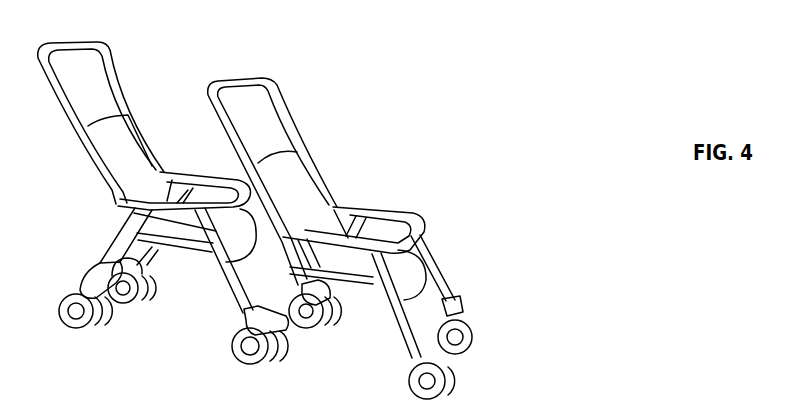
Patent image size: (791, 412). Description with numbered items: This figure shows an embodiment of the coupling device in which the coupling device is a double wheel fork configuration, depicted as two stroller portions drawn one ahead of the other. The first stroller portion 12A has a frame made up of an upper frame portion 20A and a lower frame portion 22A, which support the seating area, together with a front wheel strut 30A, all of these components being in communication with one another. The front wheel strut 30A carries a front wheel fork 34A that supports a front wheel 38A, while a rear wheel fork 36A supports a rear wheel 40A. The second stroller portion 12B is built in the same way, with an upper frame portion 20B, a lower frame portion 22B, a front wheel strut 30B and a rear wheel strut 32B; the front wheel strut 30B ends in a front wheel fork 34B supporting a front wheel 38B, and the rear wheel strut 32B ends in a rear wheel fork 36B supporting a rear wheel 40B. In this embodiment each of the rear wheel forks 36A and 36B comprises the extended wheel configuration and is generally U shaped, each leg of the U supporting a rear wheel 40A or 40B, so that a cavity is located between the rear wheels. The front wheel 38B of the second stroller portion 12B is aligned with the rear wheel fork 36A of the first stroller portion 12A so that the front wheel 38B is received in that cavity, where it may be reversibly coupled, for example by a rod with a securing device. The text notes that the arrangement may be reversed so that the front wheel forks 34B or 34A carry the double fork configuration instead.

The first stroller portion 12A is at (348, 108).
The second stroller portion 12B is at (166, 63).
The upper frame portion 20A is at (297, 88).
The upper frame portion 20B is at (116, 43).
The lower frame portion 22A is at (389, 310).
The lower frame portion 22B is at (193, 260).
The front wheel strut 30A is at (448, 272).
The front wheel strut 30B is at (224, 301).
The rear wheel strut 32B is at (108, 247).
The front wheel fork 34A is at (463, 304).
The front wheel fork 34B is at (247, 321).
The rear wheel fork 36A is at (330, 294).
The rear wheel fork 36B is at (92, 290).
The front wheel 38A is at (485, 332).
The front wheel 38B is at (278, 352).
The rear wheel 40A is at (310, 326).
The rear wheel 40B is at (90, 338).